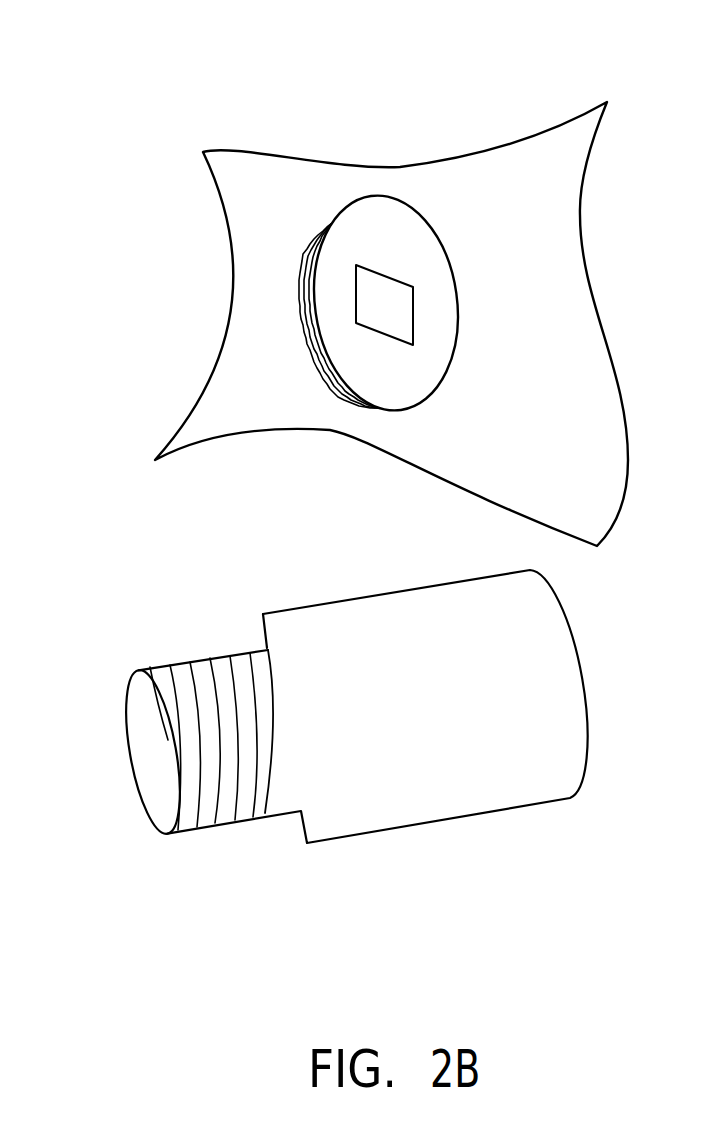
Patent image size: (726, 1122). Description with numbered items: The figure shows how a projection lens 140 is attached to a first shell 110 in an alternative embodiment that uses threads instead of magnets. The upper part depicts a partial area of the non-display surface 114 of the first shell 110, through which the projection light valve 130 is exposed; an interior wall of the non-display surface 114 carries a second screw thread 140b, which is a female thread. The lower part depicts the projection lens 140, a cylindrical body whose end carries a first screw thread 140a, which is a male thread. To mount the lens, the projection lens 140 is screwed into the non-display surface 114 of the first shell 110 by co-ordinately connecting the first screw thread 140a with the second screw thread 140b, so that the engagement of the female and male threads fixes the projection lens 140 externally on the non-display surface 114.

The first shell 110 is at (369, 281).
The non-display surface 114 is at (248, 207).
The projection light valve 130 is at (387, 297).
The projection lens 140 is at (352, 729).
The first screw thread 140a is at (173, 690).
The second screw thread 140b is at (310, 305).